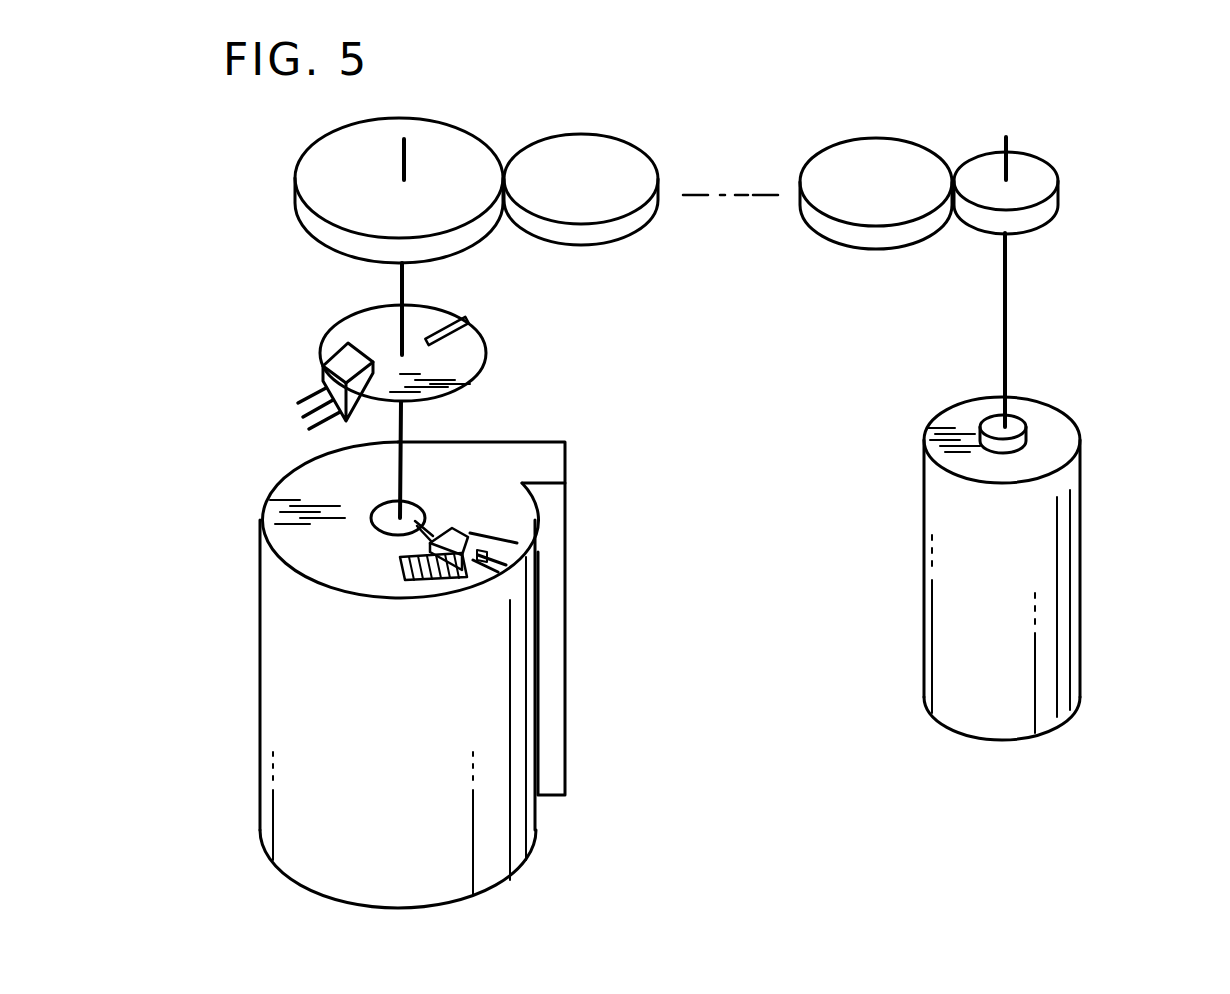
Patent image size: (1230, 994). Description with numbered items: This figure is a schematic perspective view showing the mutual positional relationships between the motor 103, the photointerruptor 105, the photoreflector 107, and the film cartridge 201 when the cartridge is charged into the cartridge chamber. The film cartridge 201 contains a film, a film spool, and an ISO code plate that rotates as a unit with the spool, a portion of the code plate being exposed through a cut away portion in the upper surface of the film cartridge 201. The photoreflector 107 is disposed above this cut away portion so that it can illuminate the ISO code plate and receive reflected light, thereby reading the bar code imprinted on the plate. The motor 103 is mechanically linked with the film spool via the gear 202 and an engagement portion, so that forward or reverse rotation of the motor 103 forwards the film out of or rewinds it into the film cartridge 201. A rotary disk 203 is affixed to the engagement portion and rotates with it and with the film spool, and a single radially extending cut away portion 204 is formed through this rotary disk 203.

The gear 202 is at (1093, 132).
The rotary disk 203 is at (467, 367).
The cut away portion 204 is at (467, 322).
The photointerruptor 105 is at (350, 360).
The photoreflector 107 is at (468, 532).
The film cartridge 201 is at (513, 843).
The motor 103 is at (940, 690).